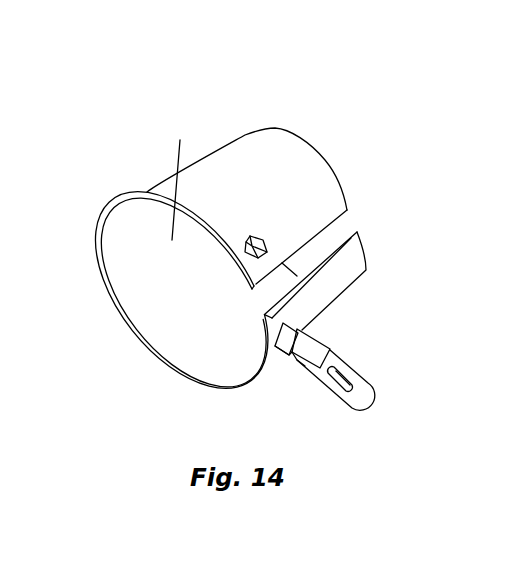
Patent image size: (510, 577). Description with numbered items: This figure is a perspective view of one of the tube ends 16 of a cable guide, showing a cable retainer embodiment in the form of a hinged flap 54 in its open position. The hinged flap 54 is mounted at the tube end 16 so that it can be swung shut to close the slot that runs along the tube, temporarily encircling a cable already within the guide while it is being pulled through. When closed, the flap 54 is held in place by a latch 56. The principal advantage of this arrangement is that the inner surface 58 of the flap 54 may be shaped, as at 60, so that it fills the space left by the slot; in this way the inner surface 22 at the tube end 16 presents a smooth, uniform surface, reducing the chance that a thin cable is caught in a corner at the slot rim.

The tube end 16 is at (158, 328).
The inner surface 22 is at (189, 183).
The hinged flap 54 is at (312, 367).
The latch 56 is at (268, 248).
The inner surface of the flap 58 is at (350, 373).
The shaped portion of flap inner surface 60 is at (310, 345).